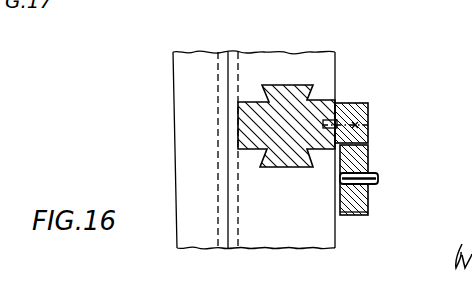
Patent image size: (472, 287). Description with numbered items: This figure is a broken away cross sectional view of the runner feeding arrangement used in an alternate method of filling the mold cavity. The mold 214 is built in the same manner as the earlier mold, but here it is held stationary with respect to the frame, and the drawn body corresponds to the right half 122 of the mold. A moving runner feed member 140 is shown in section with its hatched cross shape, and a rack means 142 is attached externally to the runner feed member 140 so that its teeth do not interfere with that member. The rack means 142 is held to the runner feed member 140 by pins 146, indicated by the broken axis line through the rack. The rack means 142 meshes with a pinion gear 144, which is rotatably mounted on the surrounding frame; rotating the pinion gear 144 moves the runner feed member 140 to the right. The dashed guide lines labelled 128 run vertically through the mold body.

The right half 122 is at (318, 67).
The slot / guide 128 is at (232, 233).
The runner feed member 140 is at (312, 105).
The rack means 142 is at (368, 134).
The pinion gear 144 is at (368, 205).
The pins 146 is at (372, 125).
The mold 214 is at (212, 37).